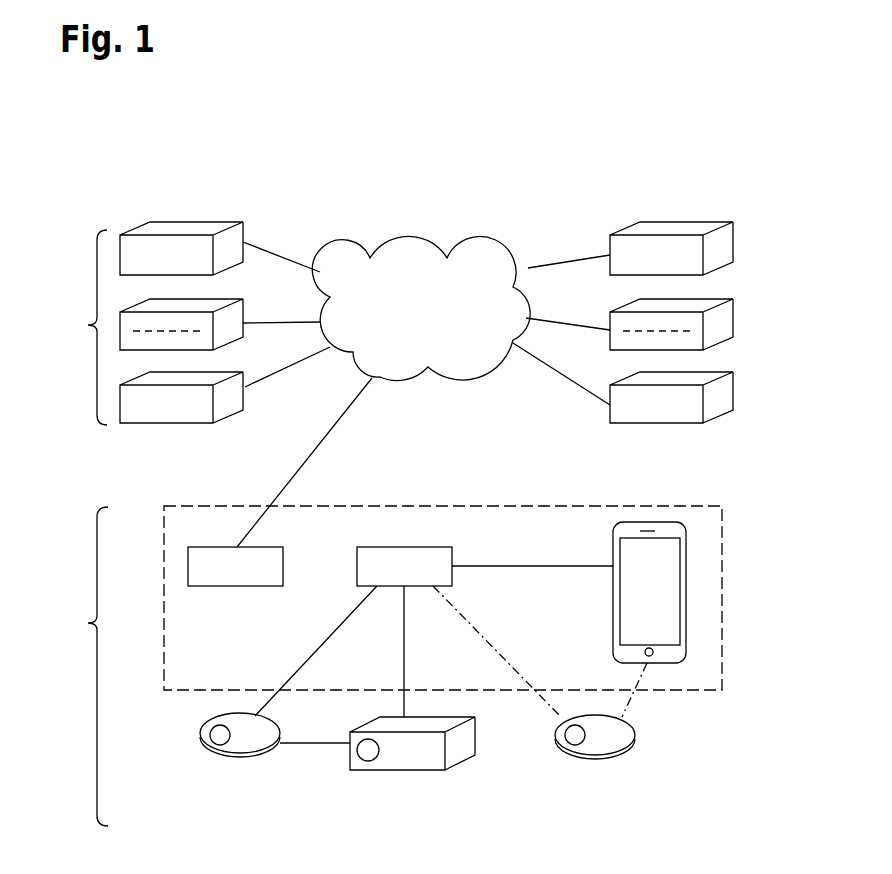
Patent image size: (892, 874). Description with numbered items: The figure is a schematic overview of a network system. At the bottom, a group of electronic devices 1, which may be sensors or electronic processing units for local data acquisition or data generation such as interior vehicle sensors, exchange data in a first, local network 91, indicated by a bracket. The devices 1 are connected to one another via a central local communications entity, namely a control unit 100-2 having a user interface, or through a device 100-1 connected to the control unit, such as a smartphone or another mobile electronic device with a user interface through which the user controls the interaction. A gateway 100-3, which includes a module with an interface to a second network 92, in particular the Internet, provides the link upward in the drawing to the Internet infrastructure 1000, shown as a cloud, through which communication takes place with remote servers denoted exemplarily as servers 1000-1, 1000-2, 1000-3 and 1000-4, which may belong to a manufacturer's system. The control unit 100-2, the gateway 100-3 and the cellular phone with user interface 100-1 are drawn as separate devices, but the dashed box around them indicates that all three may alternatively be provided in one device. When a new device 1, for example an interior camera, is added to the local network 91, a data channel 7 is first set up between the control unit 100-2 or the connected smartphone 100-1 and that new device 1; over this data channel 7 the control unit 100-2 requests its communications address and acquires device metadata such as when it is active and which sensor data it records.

The electronic device 1 is at (238, 768).
The data channel 7 is at (638, 698).
The first network 91 is at (387, 666).
The second network 92 is at (80, 327).
The device connected to the control unit 100-1 is at (686, 590).
The control unit 100-2 is at (399, 547).
The gateway 100-3 is at (218, 547).
The Internet infrastructure 1000 is at (410, 236).
The remote server 1000-1 is at (194, 222).
The remote server 1000-2 is at (157, 424).
The remote server 1000-3 is at (677, 222).
The remote server 1000-4 is at (654, 424).